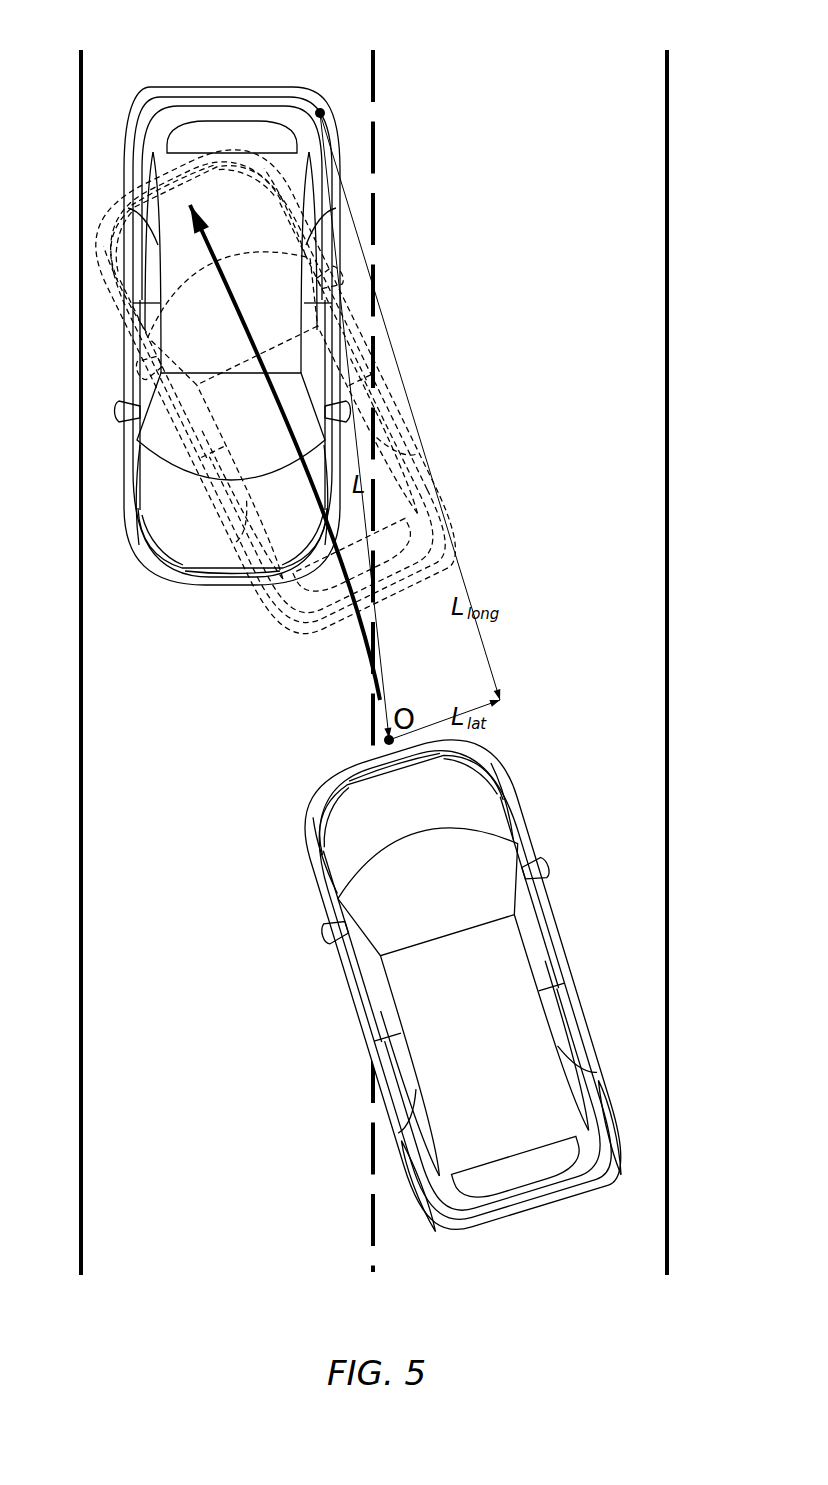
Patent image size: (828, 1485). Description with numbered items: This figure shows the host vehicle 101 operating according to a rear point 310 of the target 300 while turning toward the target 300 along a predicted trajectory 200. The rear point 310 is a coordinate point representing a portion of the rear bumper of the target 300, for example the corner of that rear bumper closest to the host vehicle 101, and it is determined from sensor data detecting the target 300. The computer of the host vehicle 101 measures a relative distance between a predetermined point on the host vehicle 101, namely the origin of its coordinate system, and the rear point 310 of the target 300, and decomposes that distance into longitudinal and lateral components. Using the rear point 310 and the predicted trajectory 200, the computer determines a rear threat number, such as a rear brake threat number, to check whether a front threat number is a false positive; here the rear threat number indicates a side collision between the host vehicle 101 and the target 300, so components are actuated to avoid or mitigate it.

The target 300 is at (208, 86).
The rear point 310 is at (322, 108).
The predicted trajectory 200 is at (357, 638).
The host vehicle 101 is at (553, 903).